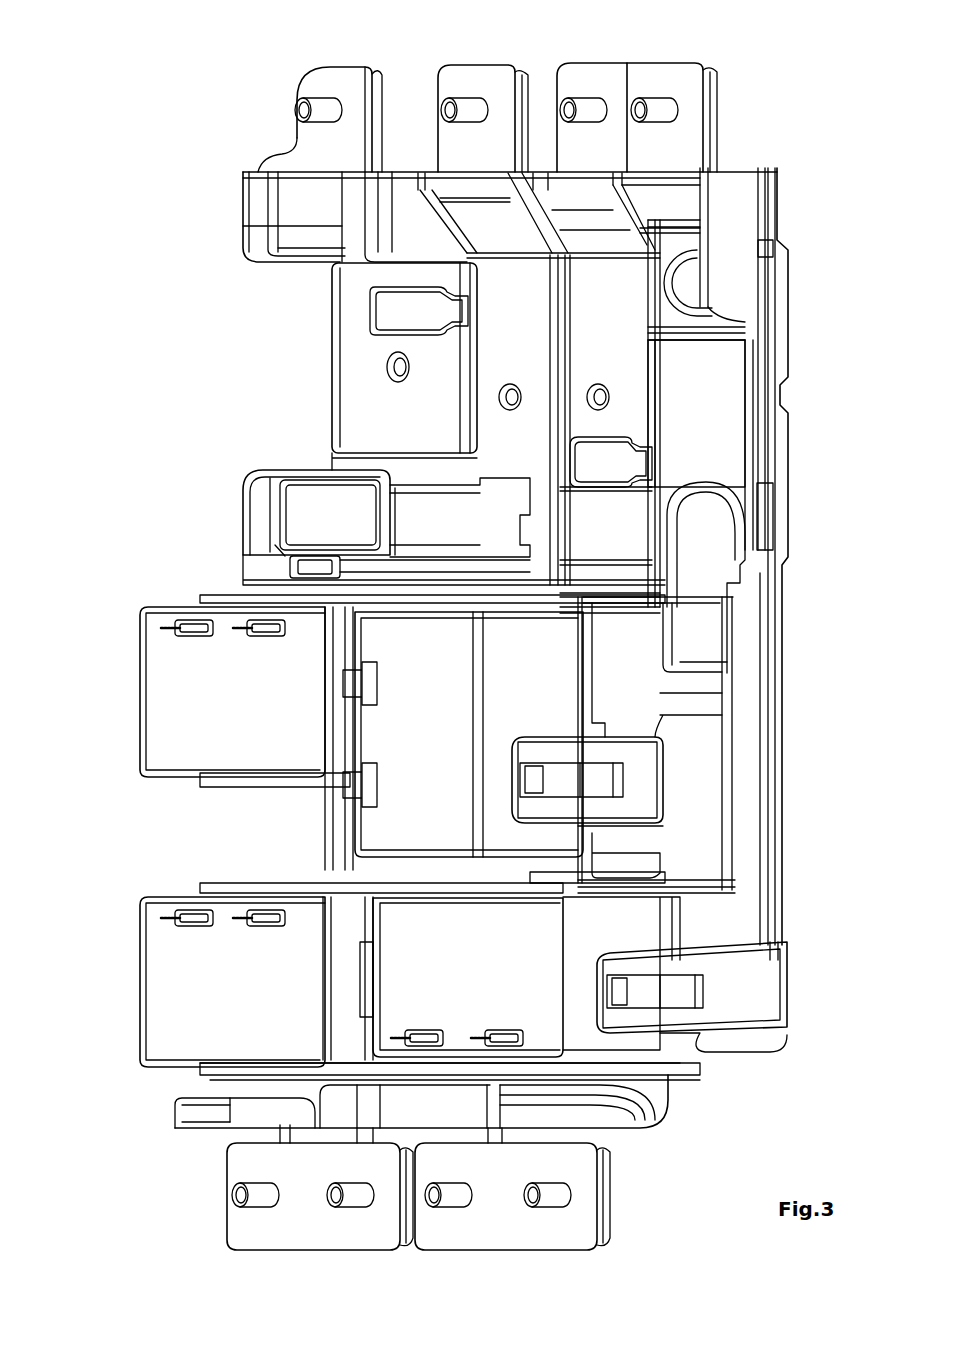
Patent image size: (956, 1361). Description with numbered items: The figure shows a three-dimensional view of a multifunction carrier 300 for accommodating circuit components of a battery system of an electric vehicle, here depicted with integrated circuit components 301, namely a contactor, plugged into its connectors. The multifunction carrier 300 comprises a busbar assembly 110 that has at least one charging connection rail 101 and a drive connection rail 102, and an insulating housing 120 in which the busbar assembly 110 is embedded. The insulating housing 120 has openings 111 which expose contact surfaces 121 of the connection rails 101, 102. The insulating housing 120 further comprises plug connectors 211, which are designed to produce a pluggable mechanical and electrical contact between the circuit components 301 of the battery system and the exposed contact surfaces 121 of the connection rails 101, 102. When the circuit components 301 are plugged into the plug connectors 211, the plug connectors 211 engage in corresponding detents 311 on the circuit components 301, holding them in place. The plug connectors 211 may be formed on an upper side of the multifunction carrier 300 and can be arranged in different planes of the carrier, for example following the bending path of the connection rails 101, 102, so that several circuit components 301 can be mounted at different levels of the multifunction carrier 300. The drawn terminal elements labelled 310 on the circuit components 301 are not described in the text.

The multifunction carrier 300 is at (115, 104).
The busbar assembly 110 is at (248, 85).
The charging connection rail 101 is at (308, 70).
The drive connection rail 102 is at (228, 1212).
The insulating housing 120 is at (243, 242).
The contact surfaces 121 is at (305, 492).
The openings 111 is at (263, 515).
The circuit components 301 is at (140, 668).
The terminal contacts 310 is at (160, 626).
The detents 311 is at (538, 768).
The plug connectors 211 is at (642, 782).